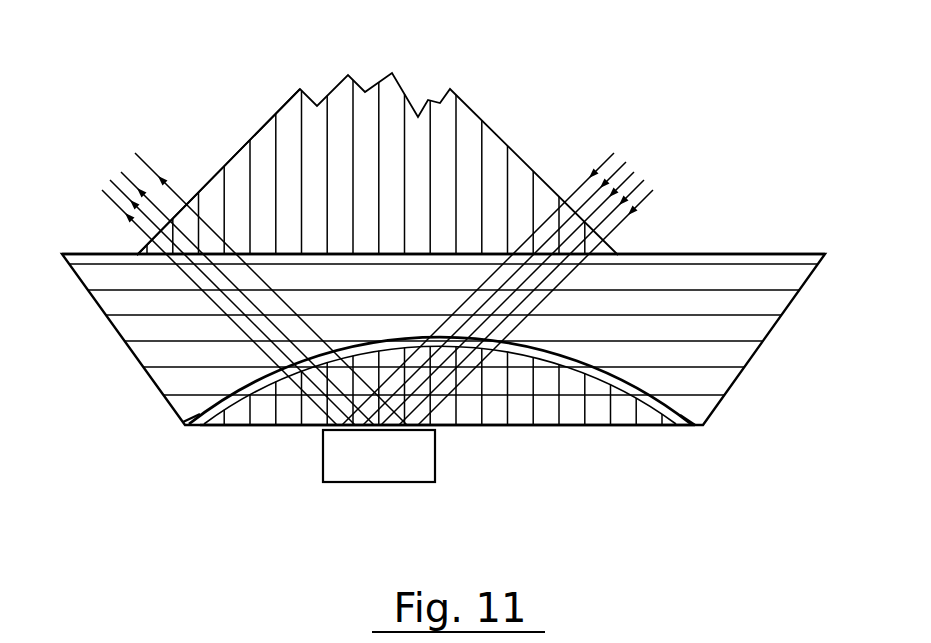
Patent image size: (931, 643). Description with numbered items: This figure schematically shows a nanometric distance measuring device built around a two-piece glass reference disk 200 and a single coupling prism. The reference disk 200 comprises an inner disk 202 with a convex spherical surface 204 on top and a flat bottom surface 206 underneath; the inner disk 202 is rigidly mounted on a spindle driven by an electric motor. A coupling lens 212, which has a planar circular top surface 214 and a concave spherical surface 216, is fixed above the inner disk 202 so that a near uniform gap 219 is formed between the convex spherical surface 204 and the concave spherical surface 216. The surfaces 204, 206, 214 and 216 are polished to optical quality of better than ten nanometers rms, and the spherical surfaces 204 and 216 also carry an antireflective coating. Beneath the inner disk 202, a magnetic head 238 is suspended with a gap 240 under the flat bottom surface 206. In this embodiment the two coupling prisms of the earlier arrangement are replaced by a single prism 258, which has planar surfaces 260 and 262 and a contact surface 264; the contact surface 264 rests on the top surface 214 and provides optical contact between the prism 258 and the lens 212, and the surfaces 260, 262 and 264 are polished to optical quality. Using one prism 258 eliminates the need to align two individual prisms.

The two-piece glass reference disk 200 is at (748, 392).
The inner disk 202 is at (627, 430).
The convex spherical surface 204 is at (605, 370).
The flat bottom surface 206 is at (572, 430).
The coupling lens 212 is at (752, 329).
The planar circular top surface 214 is at (98, 255).
The concave spherical surface 216 is at (693, 430).
The near uniform gap 219 is at (195, 430).
The magnetic head 238 is at (383, 463).
The gap 240 is at (437, 430).
The prism 258 is at (520, 139).
The planar surface 260 is at (477, 117).
The planar surface 262 is at (263, 125).
The contact surface 264 is at (253, 250).